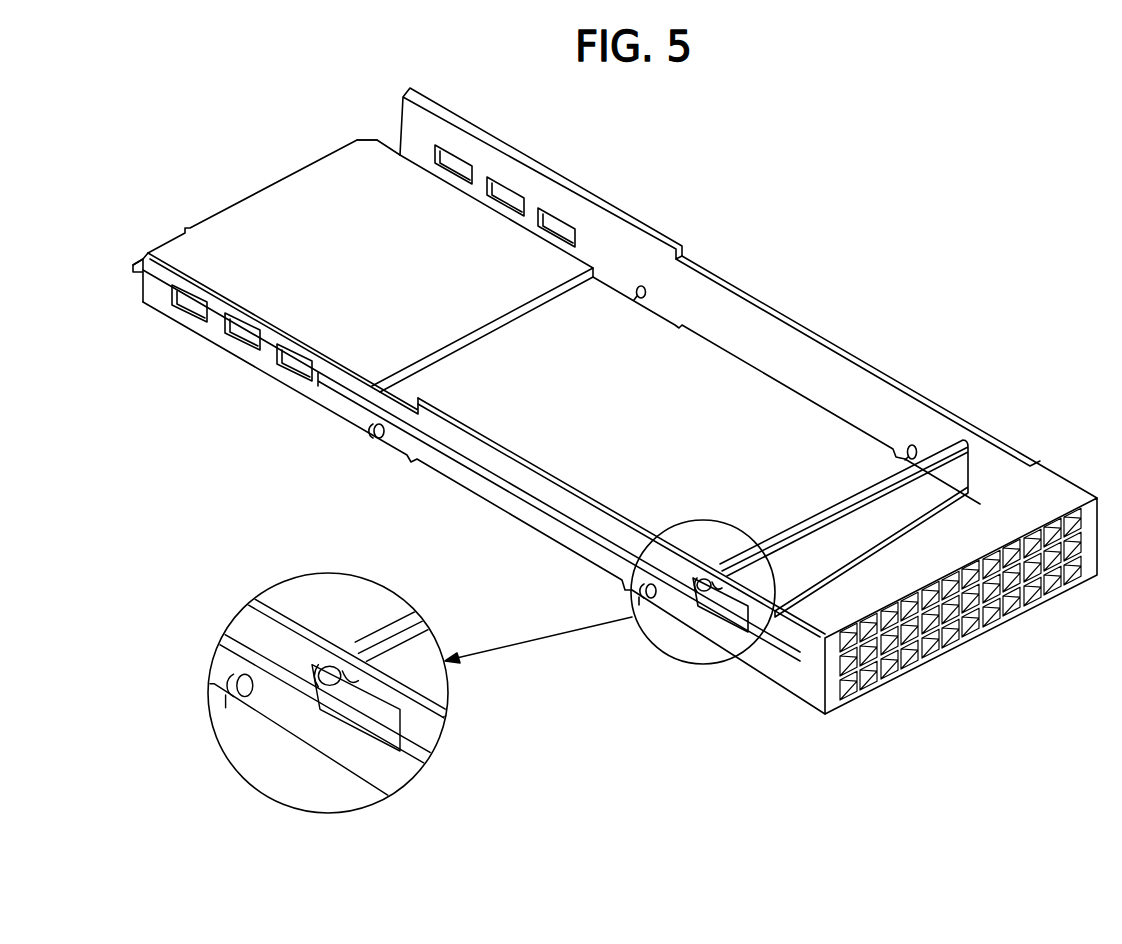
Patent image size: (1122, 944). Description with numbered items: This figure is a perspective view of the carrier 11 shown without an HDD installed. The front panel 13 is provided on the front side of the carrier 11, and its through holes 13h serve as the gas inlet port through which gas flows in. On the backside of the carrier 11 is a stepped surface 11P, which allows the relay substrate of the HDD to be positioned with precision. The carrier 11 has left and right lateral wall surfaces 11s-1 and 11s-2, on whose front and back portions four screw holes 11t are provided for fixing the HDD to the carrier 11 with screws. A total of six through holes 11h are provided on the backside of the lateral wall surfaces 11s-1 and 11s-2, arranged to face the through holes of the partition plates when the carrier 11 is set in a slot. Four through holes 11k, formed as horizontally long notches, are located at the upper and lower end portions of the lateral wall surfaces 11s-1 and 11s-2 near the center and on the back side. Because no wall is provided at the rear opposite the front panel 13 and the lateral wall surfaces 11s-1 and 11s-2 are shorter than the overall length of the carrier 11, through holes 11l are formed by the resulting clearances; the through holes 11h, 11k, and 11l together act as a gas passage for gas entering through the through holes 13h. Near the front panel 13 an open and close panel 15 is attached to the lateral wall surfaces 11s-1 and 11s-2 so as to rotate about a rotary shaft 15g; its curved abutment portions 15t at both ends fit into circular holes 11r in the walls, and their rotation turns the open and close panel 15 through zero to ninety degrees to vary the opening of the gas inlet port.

The carrier 11 is at (830, 215).
The stepped surface 11P is at (277, 194).
The through holes 11k is at (748, 293).
The left lateral wall surface 11s-1 is at (560, 497).
The right lateral wall surface 11s-2 is at (808, 358).
The through holes 11h is at (557, 222).
The through holes 11l is at (396, 154).
The screw holes 11t is at (910, 448).
The circular holes 11r is at (717, 603).
The open and close panel 15 is at (953, 460).
The rotary shaft 15g is at (717, 590).
The abutment portions 15t is at (707, 597).
The front panel 13 is at (833, 703).
The through holes 13h is at (972, 637).